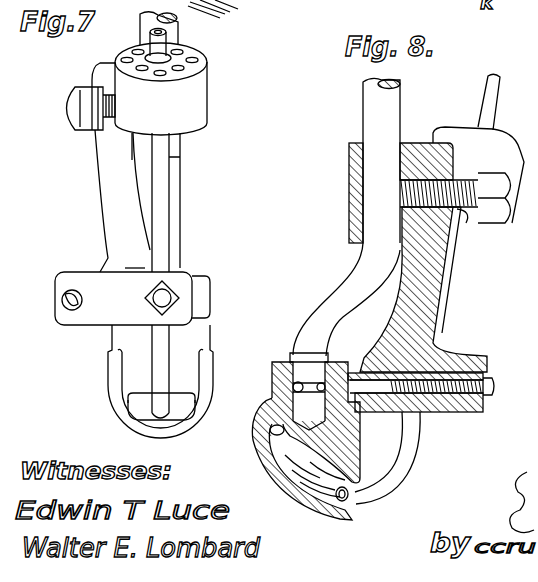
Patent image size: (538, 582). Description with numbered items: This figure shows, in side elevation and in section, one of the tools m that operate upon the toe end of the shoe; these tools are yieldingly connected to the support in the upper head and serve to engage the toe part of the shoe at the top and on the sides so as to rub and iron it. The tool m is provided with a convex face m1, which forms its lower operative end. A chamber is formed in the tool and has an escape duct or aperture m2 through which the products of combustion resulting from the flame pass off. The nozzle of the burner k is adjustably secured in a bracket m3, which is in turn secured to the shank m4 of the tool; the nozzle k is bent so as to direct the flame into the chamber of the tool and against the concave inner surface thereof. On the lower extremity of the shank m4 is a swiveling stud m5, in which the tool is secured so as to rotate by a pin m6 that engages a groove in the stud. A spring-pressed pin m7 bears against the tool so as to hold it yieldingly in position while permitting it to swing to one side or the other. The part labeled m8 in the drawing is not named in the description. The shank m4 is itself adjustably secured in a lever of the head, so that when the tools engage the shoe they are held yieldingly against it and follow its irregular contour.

In FIG. 7, the bracket m3 is at (107, 193).
In FIG. 8, the bracket m3 is at (445, 258).
In FIG. 7, the shank m4 is at (178, 178).
In FIG. 8, the shank m4 is at (384, 116).
In FIG. 7, the nozzle of the burner k is at (168, 232).
In FIG. 8, the nozzle of the burner k is at (443, 332).
In FIG. 7, the lower loop / shell m8 is at (140, 402).
In FIG. 8, the lower loop / shell m8 is at (282, 496).
In FIG. 8, the swiveling stud m5 is at (290, 353).
In FIG. 8, the pin m6 is at (303, 370).
In FIG. 8, the escape duct or aperture m2 is at (292, 387).
In FIG. 8, the tool m is at (340, 432).
In FIG. 8, the spring-pressed pin m7 is at (383, 388).
In FIG. 8, the convex face m1 is at (258, 463).